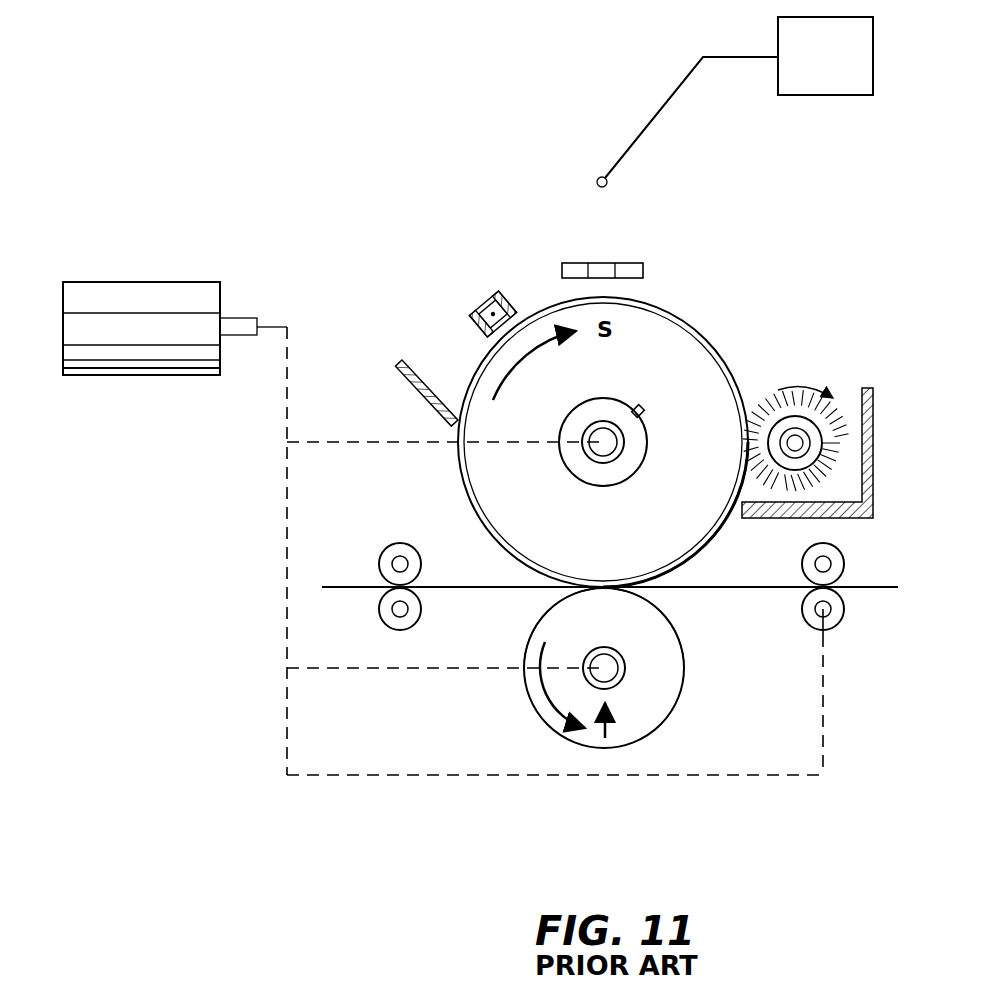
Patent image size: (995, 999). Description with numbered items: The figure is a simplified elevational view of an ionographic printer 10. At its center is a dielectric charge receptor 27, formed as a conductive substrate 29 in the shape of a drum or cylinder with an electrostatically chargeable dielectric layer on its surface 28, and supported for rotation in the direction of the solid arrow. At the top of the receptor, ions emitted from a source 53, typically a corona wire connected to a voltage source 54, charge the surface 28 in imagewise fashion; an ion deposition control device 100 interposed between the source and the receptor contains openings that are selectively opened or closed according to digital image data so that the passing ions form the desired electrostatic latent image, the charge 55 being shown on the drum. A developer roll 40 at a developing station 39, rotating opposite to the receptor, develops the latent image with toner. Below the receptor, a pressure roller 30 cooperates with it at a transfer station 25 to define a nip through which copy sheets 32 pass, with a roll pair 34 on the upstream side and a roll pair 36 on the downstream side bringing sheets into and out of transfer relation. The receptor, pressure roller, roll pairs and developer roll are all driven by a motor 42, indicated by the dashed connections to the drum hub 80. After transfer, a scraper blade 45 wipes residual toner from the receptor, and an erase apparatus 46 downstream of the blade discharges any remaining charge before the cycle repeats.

The printer 10 is at (527, 262).
The ion deposition control device 100 is at (622, 240).
The source 53 is at (597, 181).
The voltage source 54 is at (825, 95).
The electrostatic charge 55 is at (664, 286).
The developing station 39 is at (756, 384).
The developer roll 40 is at (802, 443).
The erase apparatus 46 is at (485, 303).
The surface 28 is at (477, 367).
The scraper blade 45 is at (400, 360).
The dielectric charge receptor 27 is at (436, 427).
The motor 42 is at (143, 375).
The drum hub 80 is at (580, 480).
The conductive substrate 29 is at (700, 543).
The roll pair 36 is at (400, 542).
The transfer station 25 is at (541, 599).
The copy sheets 32 is at (709, 590).
The roll pair 34 is at (845, 607).
The pressure cylinder or roller 30 is at (540, 712).